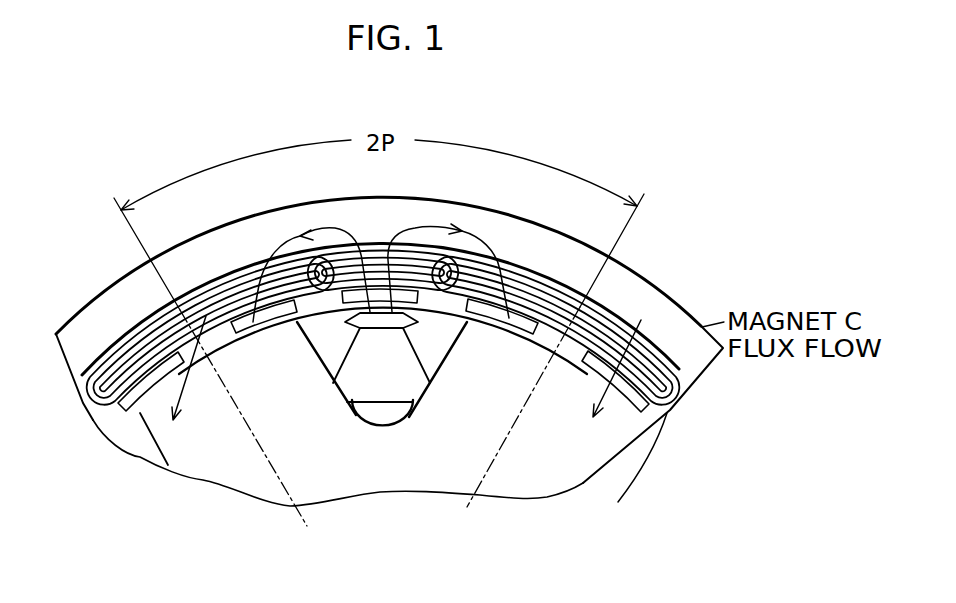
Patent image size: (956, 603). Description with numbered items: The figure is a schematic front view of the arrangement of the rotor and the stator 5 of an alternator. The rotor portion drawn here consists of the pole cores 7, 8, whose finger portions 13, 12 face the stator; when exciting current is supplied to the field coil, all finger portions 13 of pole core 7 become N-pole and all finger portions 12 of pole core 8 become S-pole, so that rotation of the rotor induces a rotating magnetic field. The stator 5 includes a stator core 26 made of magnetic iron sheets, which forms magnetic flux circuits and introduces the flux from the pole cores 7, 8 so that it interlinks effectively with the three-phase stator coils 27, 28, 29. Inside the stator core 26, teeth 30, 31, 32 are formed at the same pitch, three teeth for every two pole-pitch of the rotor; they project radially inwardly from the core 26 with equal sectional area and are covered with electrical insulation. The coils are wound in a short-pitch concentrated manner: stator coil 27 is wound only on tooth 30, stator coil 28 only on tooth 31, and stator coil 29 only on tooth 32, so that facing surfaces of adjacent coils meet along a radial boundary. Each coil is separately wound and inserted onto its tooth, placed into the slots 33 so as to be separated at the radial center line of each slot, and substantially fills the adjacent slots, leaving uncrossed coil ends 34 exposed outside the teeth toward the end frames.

The stator 5 is at (78, 284).
The pole core 7 is at (362, 405).
The pole core 8 is at (518, 487).
The finger portions 12 is at (415, 392).
The finger portions 13 is at (653, 429).
The stator core 26 is at (628, 282).
The stator coil 27 is at (215, 283).
The stator coil 28 is at (367, 311).
The stator coil 29 is at (489, 355).
The tooth 30 is at (277, 357).
The tooth 31 is at (384, 312).
The tooth 32 is at (552, 283).
The slots 33 is at (180, 307).
The coil ends 34 is at (643, 327).